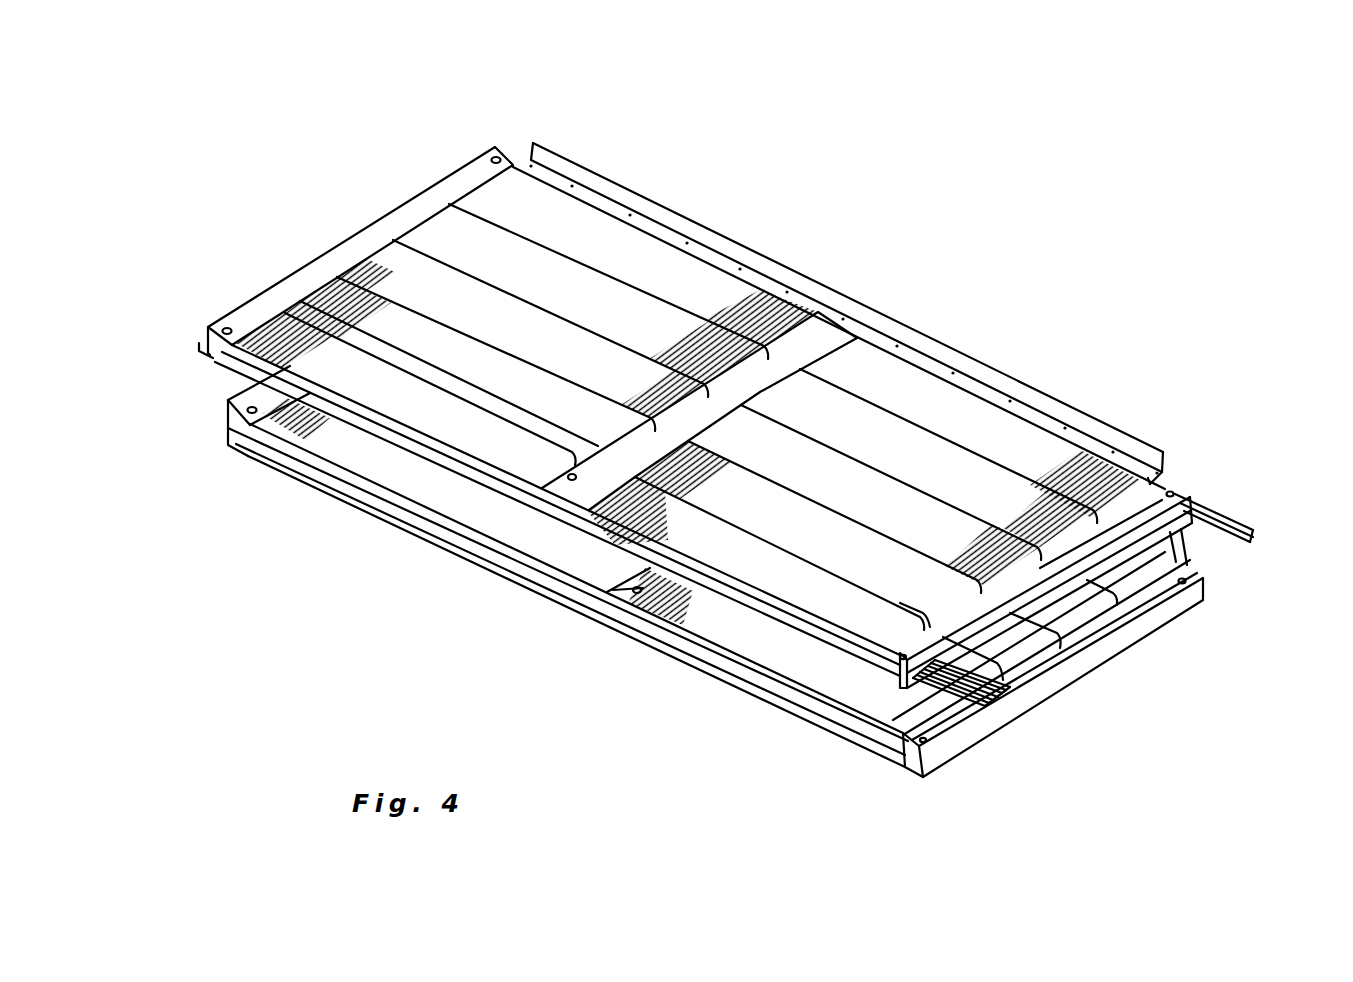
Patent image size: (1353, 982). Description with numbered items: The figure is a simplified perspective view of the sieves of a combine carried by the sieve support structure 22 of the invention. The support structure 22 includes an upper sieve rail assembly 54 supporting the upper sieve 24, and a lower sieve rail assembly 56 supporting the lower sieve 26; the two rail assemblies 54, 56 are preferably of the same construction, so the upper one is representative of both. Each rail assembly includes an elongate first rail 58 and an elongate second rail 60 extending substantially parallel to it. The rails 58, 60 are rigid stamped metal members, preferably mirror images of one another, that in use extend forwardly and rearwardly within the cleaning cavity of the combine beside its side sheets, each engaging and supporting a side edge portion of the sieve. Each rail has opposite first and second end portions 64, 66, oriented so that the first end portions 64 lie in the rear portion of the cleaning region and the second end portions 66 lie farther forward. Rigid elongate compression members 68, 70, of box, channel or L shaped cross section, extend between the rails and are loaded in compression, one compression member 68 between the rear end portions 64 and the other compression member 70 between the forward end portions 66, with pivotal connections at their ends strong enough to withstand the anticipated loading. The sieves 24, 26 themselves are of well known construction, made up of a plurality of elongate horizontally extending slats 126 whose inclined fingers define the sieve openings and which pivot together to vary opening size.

The sieve support structure 22 is at (330, 224).
The upper sieve 24 is at (742, 307).
The lower sieve 26 is at (583, 607).
The upper sieve rail assembly 54 is at (264, 286).
The lower sieve rail assembly 56 is at (266, 464).
The first rail 58 is at (468, 467).
The second rail 60 is at (1160, 482).
The first end portion 64 is at (1183, 492).
The second end portion 66 is at (521, 156).
The compression member 68 is at (1113, 623).
The compression member 70 is at (418, 193).
The slat 126 is at (775, 325).